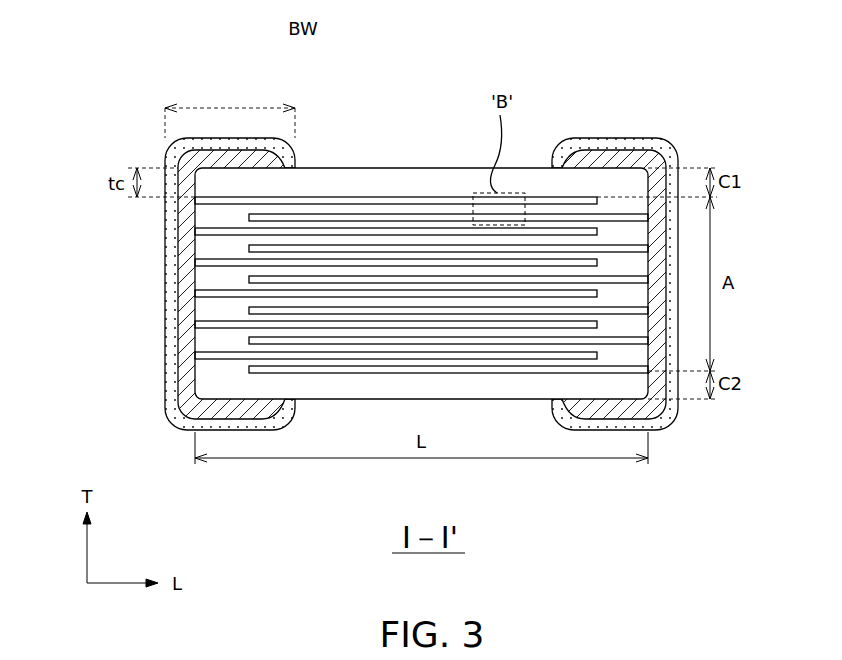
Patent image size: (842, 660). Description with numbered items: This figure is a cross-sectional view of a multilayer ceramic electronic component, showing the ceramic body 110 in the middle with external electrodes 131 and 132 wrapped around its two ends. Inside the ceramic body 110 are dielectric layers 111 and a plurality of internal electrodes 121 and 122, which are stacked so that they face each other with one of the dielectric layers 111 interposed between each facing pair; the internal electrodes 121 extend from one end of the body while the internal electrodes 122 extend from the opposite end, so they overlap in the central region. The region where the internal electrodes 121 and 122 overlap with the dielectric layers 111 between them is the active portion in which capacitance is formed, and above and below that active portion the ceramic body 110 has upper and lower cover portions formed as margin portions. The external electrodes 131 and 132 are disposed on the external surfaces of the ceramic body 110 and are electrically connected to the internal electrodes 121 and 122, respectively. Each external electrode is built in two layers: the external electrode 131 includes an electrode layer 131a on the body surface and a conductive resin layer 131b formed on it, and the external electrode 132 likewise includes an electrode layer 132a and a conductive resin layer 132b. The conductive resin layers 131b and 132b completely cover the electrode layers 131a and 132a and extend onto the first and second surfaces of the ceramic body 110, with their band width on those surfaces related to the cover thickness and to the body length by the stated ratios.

The ceramic body 110 is at (395, 168).
The dielectric layer 111 is at (205, 215).
The internal electrode 121 is at (313, 197).
The internal electrode 122 is at (262, 218).
The external electrode 131 is at (217, 224).
The electrode layer 131a is at (236, 237).
The conductive resin layer 131b is at (190, 140).
The external electrode 132 is at (628, 235).
The electrode layer 132a is at (609, 247).
The conductive resin layer 132b is at (640, 143).